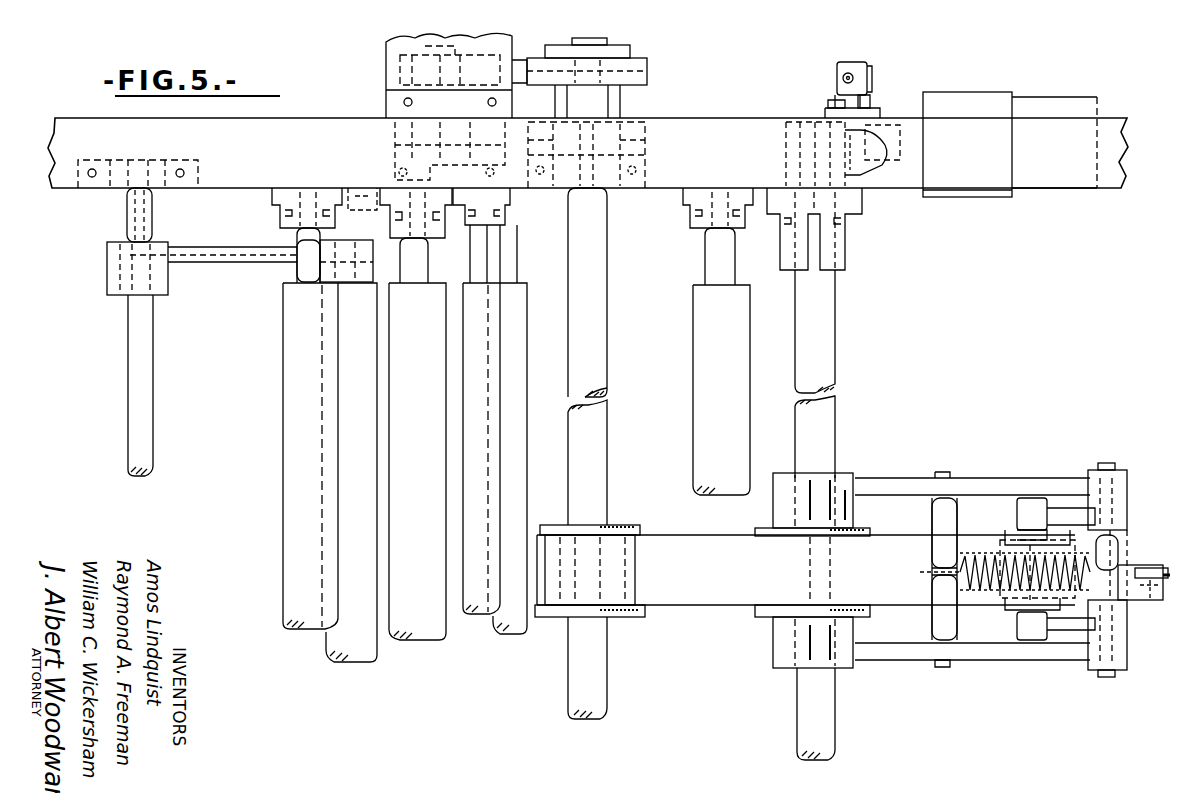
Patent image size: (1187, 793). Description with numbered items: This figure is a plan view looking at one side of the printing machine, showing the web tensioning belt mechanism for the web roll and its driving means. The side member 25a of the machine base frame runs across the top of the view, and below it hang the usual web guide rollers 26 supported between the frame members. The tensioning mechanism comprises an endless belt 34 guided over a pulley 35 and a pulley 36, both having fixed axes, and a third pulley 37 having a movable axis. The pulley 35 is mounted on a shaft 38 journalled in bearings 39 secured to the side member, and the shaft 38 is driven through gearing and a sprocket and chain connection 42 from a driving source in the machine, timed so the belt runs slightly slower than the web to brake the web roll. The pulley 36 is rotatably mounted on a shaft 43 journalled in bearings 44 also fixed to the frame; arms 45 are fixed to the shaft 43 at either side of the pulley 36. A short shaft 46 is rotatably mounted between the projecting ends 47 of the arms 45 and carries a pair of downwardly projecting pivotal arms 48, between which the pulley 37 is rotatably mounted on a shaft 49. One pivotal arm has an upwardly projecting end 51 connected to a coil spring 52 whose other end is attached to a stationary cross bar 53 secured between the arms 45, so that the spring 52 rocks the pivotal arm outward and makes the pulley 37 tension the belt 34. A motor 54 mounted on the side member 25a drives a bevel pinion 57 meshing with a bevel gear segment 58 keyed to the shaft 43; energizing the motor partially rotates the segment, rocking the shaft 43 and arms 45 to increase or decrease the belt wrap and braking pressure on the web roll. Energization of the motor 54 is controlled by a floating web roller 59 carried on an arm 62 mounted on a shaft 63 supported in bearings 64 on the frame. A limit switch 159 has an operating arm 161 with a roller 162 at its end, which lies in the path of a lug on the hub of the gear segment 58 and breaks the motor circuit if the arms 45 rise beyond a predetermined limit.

The side member 25a is at (718, 113).
The web guide rollers 26 is at (410, 372).
The endless belt 34 is at (715, 607).
The pulley 35 is at (647, 624).
The pulley 36 is at (759, 625).
The pulley 37 is at (1012, 611).
The shaft 38 is at (613, 455).
The bearings 39 is at (631, 114).
The sprocket and chain connection 42 is at (521, 56).
The shaft 43 is at (846, 436).
The bearings 44 is at (858, 250).
The arms 45 is at (1001, 475).
The short shaft 46 is at (1126, 549).
The projecting ends 47 is at (1088, 472).
The pivotal arms 48 is at (1068, 500).
The shaft 49 is at (1010, 615).
The upwardly projecting end 51 is at (1136, 604).
The spring 52 is at (993, 547).
The stationary cross bar 53 is at (923, 521).
The motor 54 is at (974, 96).
The bevel pinion 57 is at (871, 139).
The bevel gear segment 58 is at (865, 162).
The floating web roller 59 is at (370, 443).
The arm 62 is at (206, 245).
The shaft 63 is at (164, 364).
The bearings 64 is at (174, 160).
The limit switch 159 is at (868, 58).
The operating arm 161 is at (830, 92).
The roller 162 is at (864, 108).